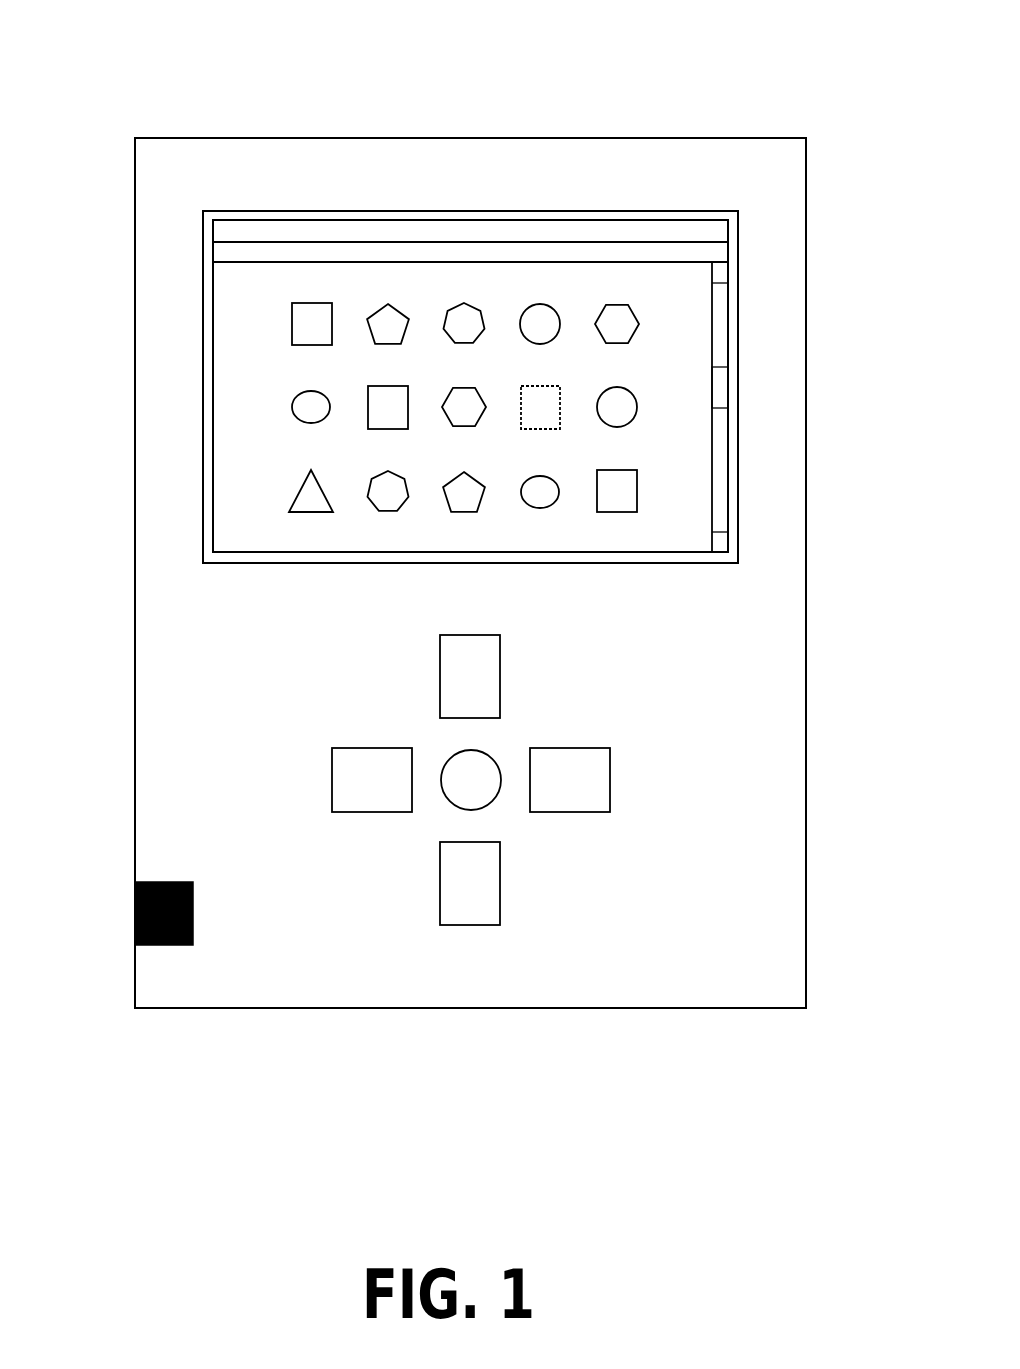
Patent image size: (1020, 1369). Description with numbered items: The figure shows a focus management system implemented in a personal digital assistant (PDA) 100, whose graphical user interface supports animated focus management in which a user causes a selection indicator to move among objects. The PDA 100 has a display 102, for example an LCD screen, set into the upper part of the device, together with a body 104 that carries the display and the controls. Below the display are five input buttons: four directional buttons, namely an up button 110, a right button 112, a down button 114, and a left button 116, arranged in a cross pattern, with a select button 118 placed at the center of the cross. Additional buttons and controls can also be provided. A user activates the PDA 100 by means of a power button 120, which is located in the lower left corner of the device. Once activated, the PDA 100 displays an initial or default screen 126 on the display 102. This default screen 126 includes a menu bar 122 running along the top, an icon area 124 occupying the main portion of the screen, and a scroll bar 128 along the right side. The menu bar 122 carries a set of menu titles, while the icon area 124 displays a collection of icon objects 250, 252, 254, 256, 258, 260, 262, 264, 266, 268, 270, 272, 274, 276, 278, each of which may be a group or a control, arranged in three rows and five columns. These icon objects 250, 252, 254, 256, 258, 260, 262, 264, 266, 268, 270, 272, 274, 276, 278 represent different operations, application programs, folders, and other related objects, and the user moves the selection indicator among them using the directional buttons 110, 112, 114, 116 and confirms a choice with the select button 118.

The personal digital assistant 100 is at (425, 504).
The display 102 is at (470, 314).
The housing 104 is at (470, 615).
The up button 110 is at (531, 671).
The right button 112 is at (631, 769).
The down button 114 is at (531, 890).
The left button 116 is at (312, 769).
The select button 118 is at (392, 736).
The power button 120 is at (114, 902).
The menu bar 122 is at (470, 220).
The icon area 124 is at (549, 402).
The default screen 126 is at (377, 392).
The scroll bar 128 is at (816, 407).
The icon object 250 is at (312, 324).
The icon object 252 is at (388, 324).
The icon object 254 is at (464, 323).
The icon object 256 is at (540, 324).
The icon object 258 is at (617, 324).
The icon object 260 is at (311, 407).
The icon object 262 is at (388, 407).
The icon object 264 is at (464, 407).
The icon object 266 is at (540, 407).
The icon object 268 is at (617, 407).
The icon object 270 is at (311, 491).
The icon object 272 is at (388, 491).
The icon object 274 is at (464, 492).
The icon object 276 is at (540, 492).
The icon object 278 is at (617, 491).